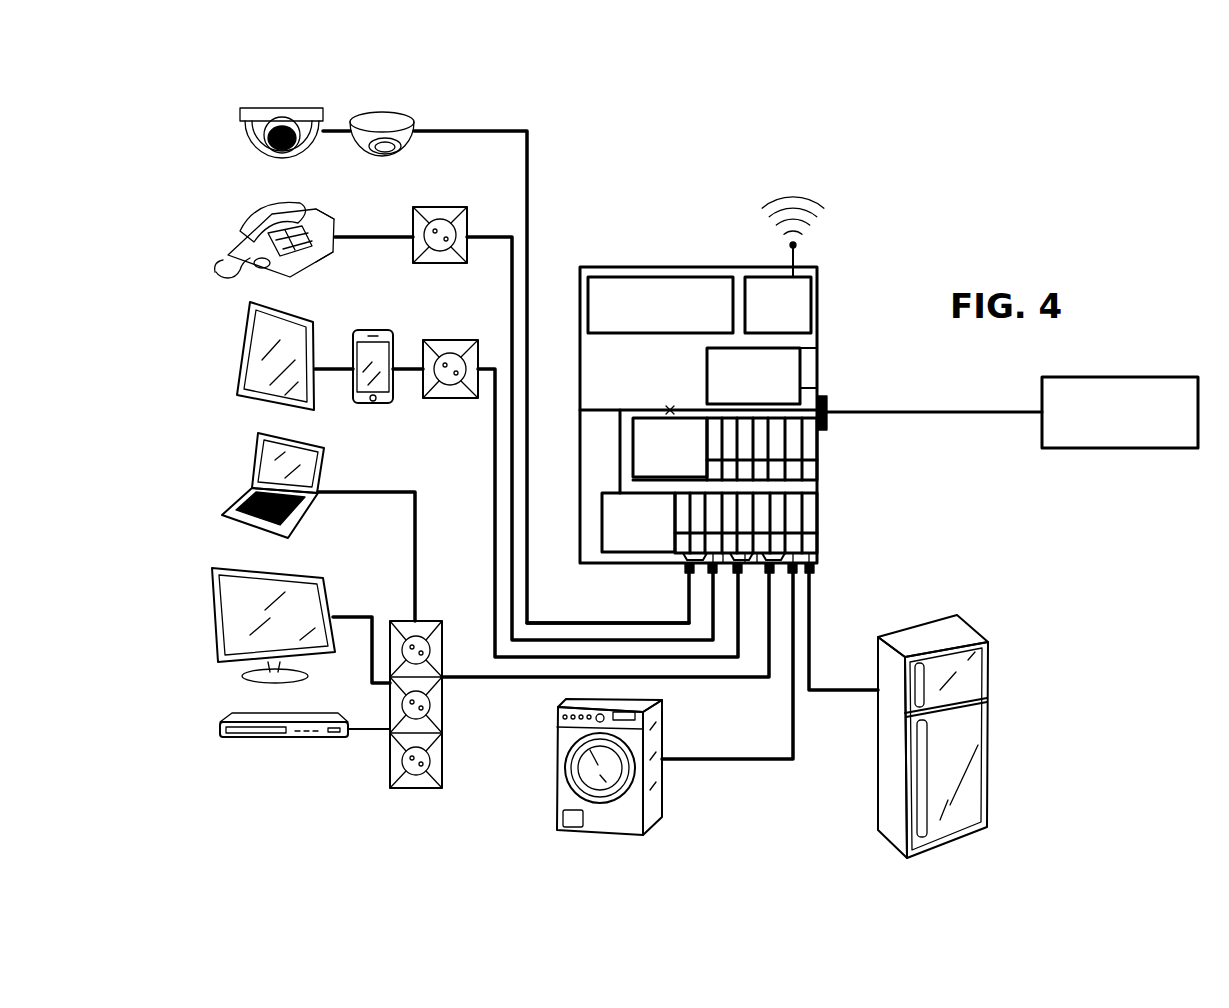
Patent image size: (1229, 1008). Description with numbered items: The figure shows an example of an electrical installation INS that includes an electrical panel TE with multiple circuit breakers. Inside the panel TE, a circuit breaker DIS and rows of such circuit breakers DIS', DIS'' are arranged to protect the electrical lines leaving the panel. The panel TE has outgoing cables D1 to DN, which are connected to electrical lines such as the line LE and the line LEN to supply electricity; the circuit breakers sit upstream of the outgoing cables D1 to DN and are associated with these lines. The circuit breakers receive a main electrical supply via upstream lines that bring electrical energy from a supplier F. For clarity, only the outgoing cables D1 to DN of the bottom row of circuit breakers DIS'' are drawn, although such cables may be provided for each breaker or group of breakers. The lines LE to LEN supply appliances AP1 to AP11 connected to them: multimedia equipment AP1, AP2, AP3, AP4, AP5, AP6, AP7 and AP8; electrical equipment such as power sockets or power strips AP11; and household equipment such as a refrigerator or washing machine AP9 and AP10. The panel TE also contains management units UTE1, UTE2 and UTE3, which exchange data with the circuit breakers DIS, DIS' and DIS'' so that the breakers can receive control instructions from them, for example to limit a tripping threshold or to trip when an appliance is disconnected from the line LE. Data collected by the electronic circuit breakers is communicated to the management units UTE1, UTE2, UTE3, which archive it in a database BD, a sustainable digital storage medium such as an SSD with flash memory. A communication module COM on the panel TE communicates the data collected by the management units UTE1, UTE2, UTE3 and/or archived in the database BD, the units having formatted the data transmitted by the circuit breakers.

The appliance AP1 is at (258, 108).
The appliance AP2 is at (398, 112).
The appliance AP3 is at (252, 210).
The appliance AP4 is at (240, 324).
The appliance AP5 is at (370, 330).
The appliance AP6 is at (232, 512).
The appliance AP7 is at (212, 593).
The appliance AP8 is at (224, 716).
The appliance AP9 is at (557, 742).
The appliance AP10 is at (990, 672).
The appliance AP11 is at (452, 207).
The electrical panel TE is at (818, 292).
The database BD is at (660, 305).
The communication module COM is at (778, 305).
The management unit UTE1 is at (753, 376).
The management unit UTE2 is at (670, 447).
The management unit UTE3 is at (638, 522).
The circuit breaker DIS is at (837, 363).
The row of circuit breakers DIS' is at (756, 449).
The row of circuit breakers DIS'' is at (780, 523).
The outgoing cable D1 is at (688, 568).
The outgoing cable DN is at (814, 570).
The electrical line LE is at (620, 622).
The electrical line LEN is at (846, 693).
The supplier F is at (1012, 412).
The electrical installation INS is at (1043, 540).